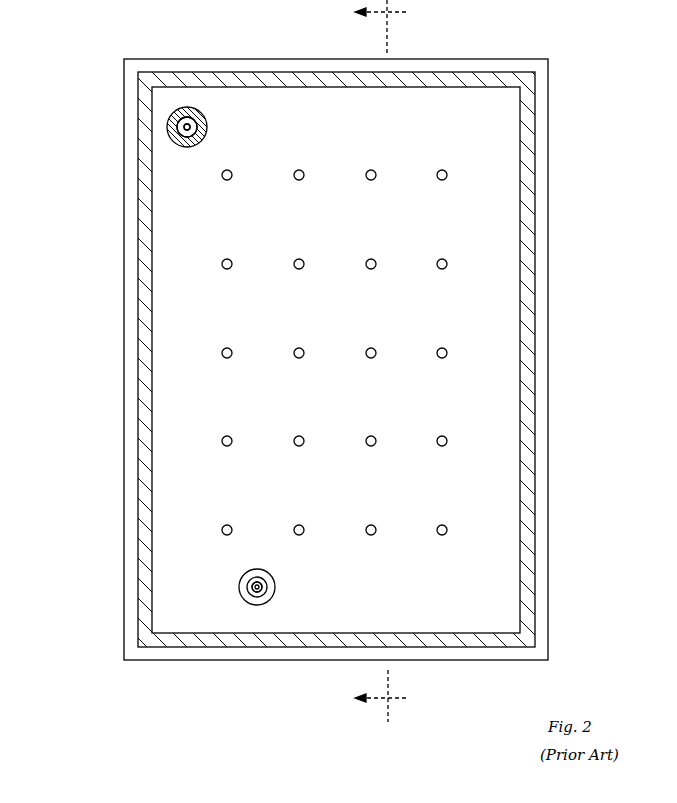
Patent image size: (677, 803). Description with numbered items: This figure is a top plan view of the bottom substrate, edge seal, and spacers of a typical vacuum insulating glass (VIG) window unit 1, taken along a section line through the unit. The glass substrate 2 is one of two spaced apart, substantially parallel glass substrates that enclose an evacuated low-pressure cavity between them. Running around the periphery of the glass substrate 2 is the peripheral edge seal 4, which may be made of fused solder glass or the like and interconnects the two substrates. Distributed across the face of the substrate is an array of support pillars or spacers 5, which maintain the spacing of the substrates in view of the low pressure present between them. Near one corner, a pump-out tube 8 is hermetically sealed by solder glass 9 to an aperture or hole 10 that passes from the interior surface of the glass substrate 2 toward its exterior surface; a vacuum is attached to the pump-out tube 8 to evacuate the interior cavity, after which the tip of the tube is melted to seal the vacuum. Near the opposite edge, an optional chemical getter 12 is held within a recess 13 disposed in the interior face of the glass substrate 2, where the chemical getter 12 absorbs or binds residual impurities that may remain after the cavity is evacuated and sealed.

The VIG window unit 1 is at (110, 545).
The glass substrate 2 is at (305, 62).
The peripheral edge seal 4 is at (218, 82).
The support pillars/spacers 5 is at (452, 261).
The pump-out tube 8 is at (168, 122).
The solder glass 9 is at (190, 148).
The aperture/hole 10 is at (185, 128).
The chemical getter 12 is at (255, 592).
The recess 13 is at (275, 587).